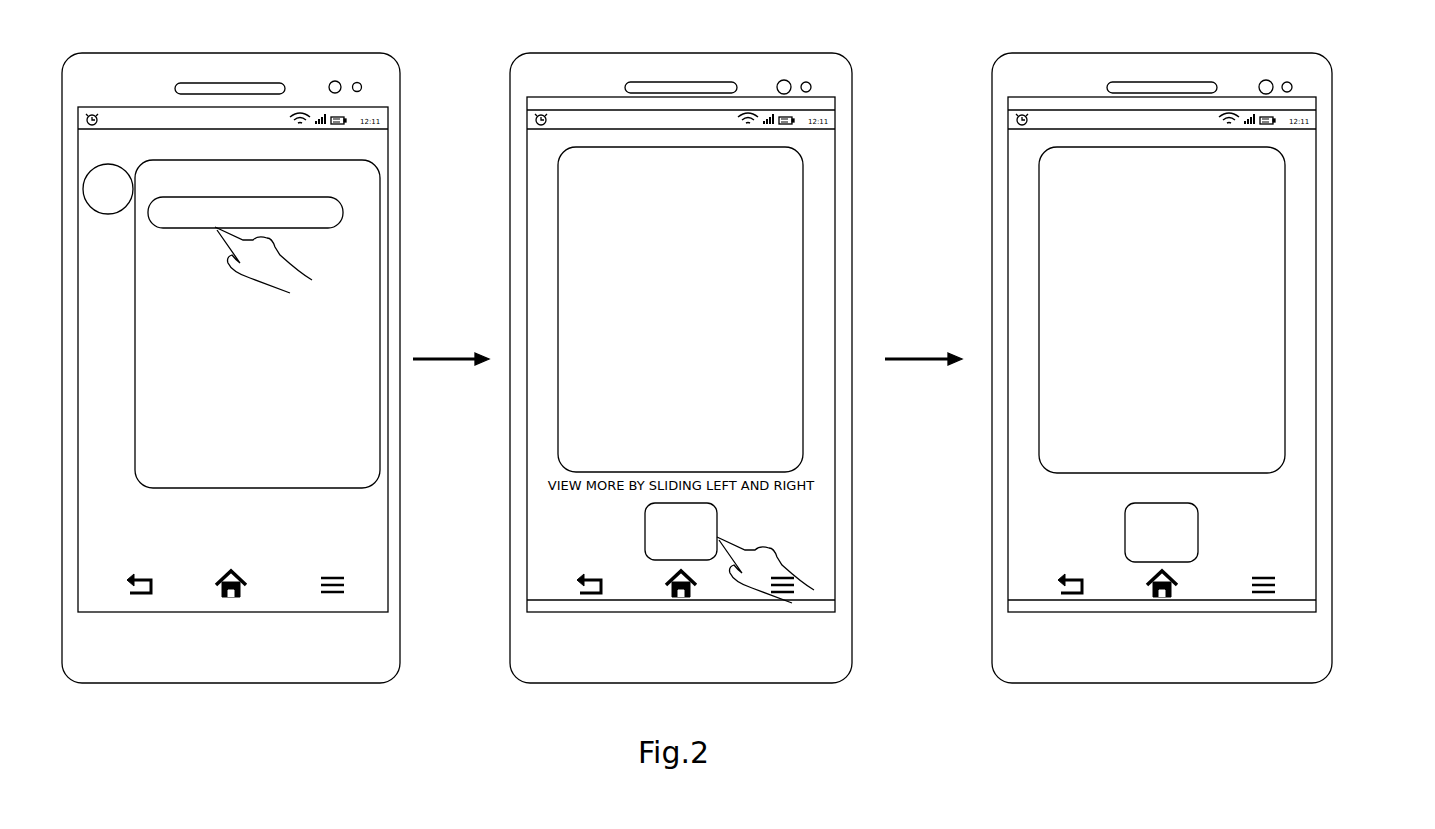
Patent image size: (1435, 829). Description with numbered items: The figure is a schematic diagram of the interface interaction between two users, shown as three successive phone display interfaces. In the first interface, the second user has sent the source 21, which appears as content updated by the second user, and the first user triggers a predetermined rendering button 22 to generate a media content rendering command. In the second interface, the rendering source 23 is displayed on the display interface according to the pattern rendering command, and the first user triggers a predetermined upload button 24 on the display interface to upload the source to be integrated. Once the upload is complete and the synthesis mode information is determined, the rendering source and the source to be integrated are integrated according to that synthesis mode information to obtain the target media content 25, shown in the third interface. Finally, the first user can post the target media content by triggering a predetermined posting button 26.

The source 21 is at (163, 342).
The predetermined rendering button 22 is at (343, 208).
The rendering source 23 is at (764, 227).
The predetermined upload button 24 is at (718, 530).
The target media content 25 is at (1227, 287).
The predetermined posting button 26 is at (1198, 533).